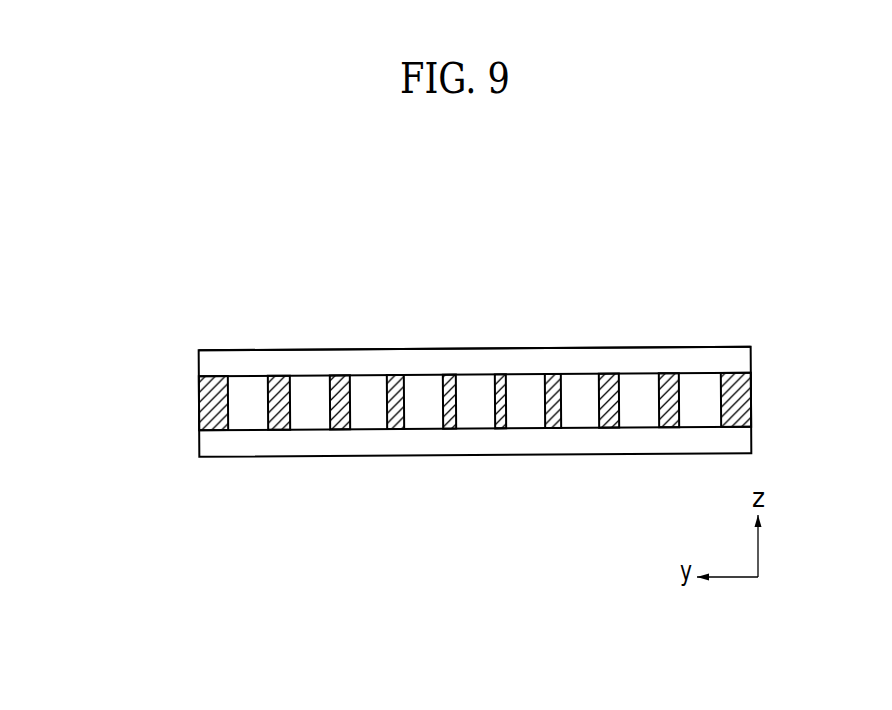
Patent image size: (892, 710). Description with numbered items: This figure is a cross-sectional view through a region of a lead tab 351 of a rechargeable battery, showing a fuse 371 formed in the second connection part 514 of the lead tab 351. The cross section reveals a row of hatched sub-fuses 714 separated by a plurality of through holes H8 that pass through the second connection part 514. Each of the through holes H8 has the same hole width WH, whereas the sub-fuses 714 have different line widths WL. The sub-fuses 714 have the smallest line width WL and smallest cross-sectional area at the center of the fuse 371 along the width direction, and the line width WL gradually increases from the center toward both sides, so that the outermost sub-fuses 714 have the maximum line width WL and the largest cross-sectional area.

The fuse 371 is at (190, 401).
The second connection part 514 is at (475, 324).
The lead tab 351 is at (573, 348).
The sub-fuses 714 is at (342, 350).
The through holes H8 is at (372, 408).
The line width WL is at (456, 435).
The hole width WH is at (545, 435).